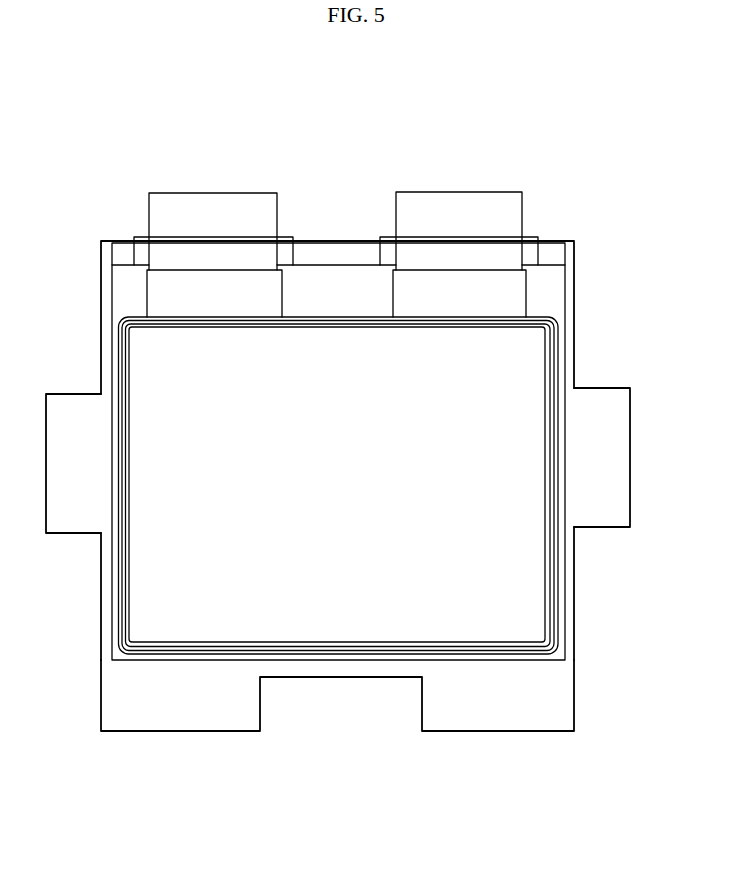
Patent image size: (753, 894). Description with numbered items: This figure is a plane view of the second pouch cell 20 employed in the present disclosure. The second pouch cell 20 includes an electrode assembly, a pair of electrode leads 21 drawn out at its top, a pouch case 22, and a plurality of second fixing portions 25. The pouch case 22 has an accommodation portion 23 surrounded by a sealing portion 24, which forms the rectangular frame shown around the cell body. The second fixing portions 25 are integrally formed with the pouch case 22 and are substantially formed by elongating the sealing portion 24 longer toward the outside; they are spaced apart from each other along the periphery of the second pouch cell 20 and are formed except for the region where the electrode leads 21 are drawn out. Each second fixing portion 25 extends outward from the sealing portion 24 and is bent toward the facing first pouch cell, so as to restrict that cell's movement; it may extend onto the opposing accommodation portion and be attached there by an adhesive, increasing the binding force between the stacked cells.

The second pouch cell 20 is at (210, 131).
The electrode leads 21 is at (478, 205).
The pouch case 22 is at (398, 485).
The accommodation portion 23 is at (528, 612).
The sealing portion 24 is at (573, 553).
The second fixing portions 25 is at (614, 455).